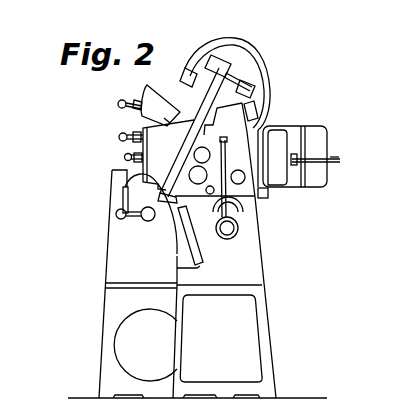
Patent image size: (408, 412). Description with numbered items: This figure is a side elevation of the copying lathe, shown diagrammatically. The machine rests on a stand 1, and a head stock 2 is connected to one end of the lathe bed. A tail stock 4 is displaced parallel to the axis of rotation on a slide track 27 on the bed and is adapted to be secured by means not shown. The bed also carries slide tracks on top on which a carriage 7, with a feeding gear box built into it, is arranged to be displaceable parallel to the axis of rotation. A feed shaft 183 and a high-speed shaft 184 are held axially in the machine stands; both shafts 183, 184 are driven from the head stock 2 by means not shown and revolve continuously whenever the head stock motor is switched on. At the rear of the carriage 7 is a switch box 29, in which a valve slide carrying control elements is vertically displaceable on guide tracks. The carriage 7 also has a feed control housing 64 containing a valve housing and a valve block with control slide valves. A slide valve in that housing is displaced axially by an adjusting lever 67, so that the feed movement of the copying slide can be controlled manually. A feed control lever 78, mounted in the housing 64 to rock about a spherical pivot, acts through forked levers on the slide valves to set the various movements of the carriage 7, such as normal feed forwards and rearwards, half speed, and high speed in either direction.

The stand 1 is at (113, 306).
The head stock 2 is at (125, 251).
The tail stock 4 is at (137, 198).
The carriage 7 is at (200, 130).
The slide track 27 is at (196, 236).
The switch box 29 is at (280, 170).
The feed control housing 64 is at (162, 135).
The adjusting lever 67 is at (124, 157).
The feed control lever 78 is at (119, 137).
The feed shaft 183 is at (258, 195).
The high-speed shaft 184 is at (243, 179).